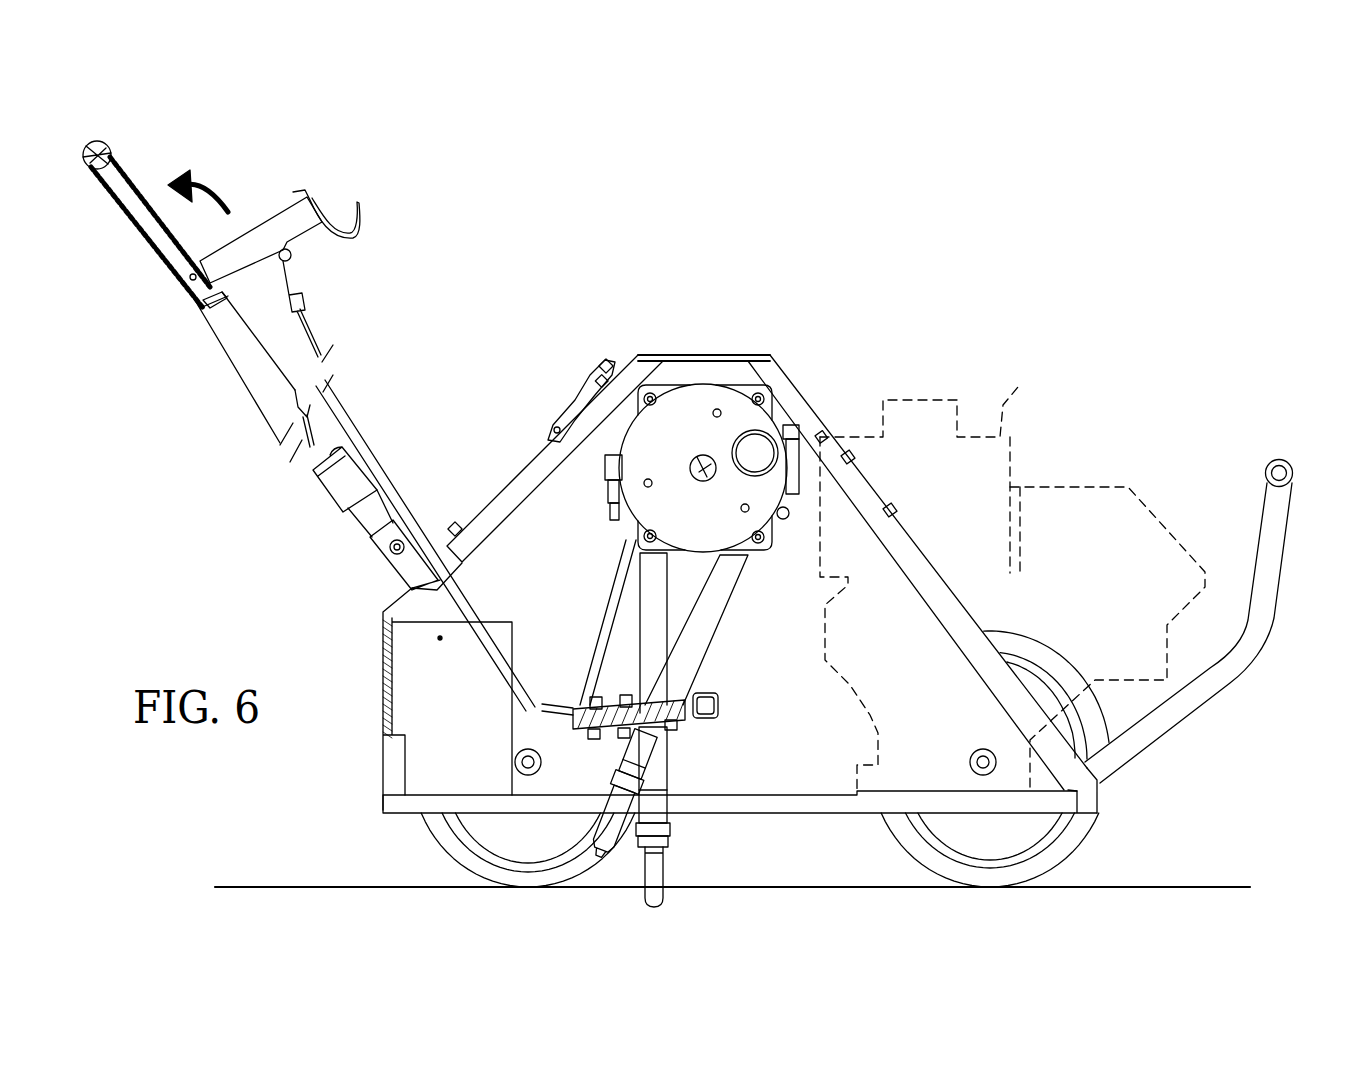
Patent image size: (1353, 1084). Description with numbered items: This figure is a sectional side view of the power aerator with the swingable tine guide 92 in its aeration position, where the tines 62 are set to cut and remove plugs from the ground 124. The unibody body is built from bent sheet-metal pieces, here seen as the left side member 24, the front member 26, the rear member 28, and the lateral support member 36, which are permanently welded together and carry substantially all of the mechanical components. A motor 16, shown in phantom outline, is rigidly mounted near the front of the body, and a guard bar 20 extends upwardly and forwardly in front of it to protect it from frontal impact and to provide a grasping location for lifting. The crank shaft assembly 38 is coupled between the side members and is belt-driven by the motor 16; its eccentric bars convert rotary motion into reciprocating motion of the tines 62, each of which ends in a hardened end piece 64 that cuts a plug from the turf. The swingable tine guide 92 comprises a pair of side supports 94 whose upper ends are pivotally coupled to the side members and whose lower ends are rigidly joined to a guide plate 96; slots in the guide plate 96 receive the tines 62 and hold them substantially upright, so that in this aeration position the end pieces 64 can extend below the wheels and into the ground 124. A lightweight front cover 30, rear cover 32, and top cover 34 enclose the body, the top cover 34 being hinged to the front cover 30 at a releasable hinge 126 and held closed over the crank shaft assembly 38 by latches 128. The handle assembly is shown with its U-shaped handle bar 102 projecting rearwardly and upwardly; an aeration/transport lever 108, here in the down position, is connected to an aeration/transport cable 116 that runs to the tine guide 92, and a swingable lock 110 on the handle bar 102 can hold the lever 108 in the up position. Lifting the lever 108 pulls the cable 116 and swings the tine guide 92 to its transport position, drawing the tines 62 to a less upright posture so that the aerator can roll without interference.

The motor 16 is at (1010, 398).
The guard bar 20 is at (1210, 694).
The left side member 24 is at (710, 805).
The front member 26 is at (1105, 793).
The rear member 28 is at (385, 688).
The front cover 30 is at (923, 553).
The rear cover 32 is at (522, 472).
The top cover 34 is at (700, 353).
The lateral support member 36 is at (704, 692).
The crank shaft assembly 38 is at (736, 369).
The tine 62 is at (640, 605).
The end piece 64 is at (590, 862).
The swingable tine guide 92 is at (591, 633).
The side support 94 is at (597, 674).
The guide plate 96 is at (686, 721).
The handle bar 102 is at (230, 358).
The aeration/transport lever 108 is at (256, 215).
The swingable lock 110 is at (115, 162).
The aeration/transport cable 116 is at (370, 424).
The ground 124 is at (1165, 887).
The releasable hinge 126 is at (826, 440).
The latch 128 is at (580, 378).